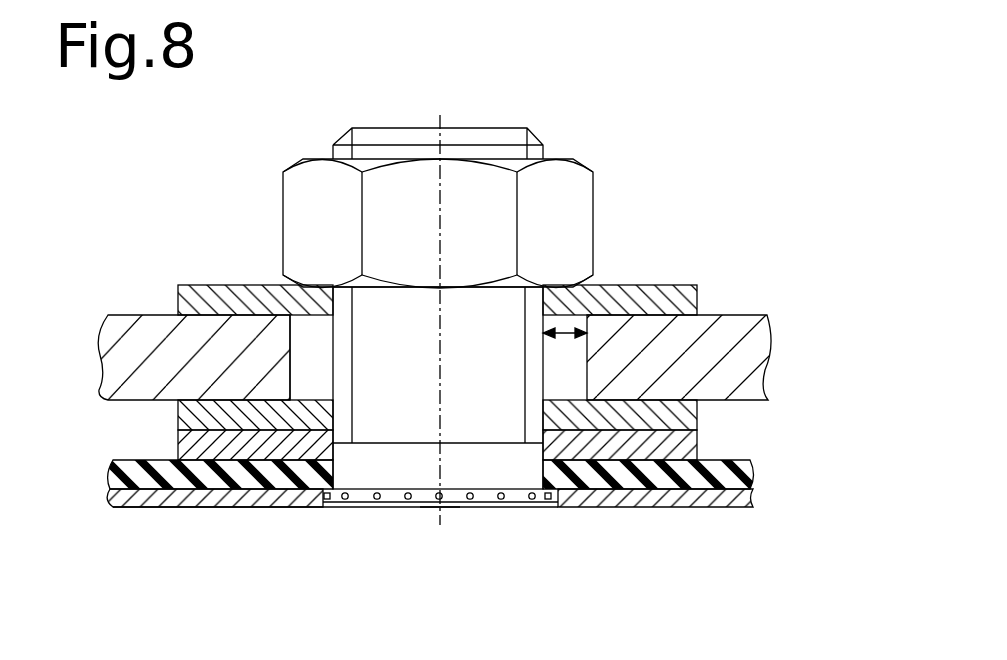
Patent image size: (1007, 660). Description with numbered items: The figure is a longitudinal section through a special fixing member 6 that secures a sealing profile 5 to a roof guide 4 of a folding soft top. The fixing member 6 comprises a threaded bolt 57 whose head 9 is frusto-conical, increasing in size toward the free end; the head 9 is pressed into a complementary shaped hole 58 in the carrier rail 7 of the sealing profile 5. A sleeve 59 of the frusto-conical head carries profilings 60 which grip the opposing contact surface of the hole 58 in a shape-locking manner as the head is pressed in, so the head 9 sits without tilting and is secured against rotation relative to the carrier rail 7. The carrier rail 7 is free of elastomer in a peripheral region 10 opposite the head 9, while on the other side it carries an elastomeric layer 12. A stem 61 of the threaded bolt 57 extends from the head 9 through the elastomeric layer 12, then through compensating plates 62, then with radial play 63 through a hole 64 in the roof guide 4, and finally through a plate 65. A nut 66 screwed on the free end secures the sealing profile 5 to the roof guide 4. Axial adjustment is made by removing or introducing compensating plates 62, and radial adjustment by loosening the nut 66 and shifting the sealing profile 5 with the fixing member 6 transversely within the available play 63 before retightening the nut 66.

The threaded bolt 57 is at (561, 149).
The nut 66 is at (593, 188).
The stem 61 is at (553, 310).
The plate 65 is at (697, 296).
The roof guide 4 is at (767, 357).
The hole 64 is at (291, 349).
The radial play 63 is at (561, 338).
The compensating plates 62 is at (697, 443).
The elastomeric layer 12 is at (758, 486).
The sealing profile 5 is at (153, 518).
The peripheral region 10 is at (218, 508).
The carrier rail 7 is at (745, 507).
The head 9 is at (478, 508).
The sleeve 59 is at (397, 500).
The profilings 60 is at (345, 499).
The fixing member 6 is at (436, 518).
The hole 58 is at (543, 493).